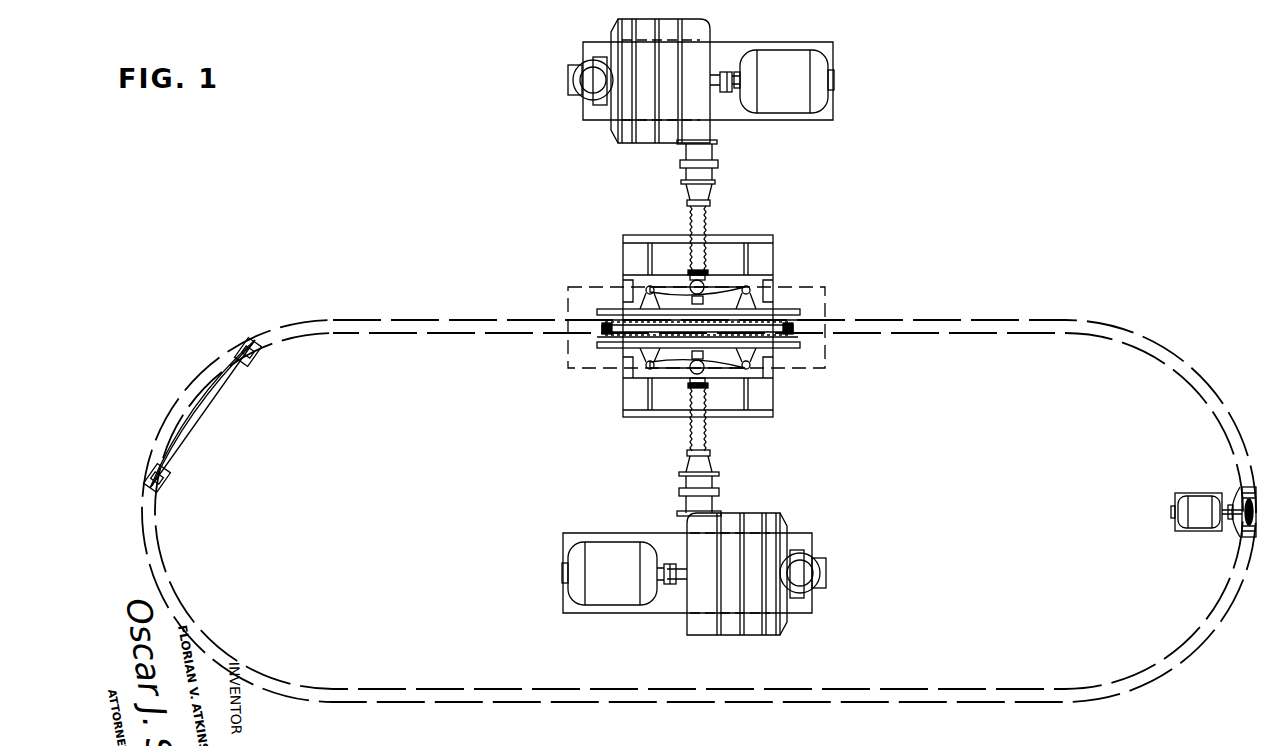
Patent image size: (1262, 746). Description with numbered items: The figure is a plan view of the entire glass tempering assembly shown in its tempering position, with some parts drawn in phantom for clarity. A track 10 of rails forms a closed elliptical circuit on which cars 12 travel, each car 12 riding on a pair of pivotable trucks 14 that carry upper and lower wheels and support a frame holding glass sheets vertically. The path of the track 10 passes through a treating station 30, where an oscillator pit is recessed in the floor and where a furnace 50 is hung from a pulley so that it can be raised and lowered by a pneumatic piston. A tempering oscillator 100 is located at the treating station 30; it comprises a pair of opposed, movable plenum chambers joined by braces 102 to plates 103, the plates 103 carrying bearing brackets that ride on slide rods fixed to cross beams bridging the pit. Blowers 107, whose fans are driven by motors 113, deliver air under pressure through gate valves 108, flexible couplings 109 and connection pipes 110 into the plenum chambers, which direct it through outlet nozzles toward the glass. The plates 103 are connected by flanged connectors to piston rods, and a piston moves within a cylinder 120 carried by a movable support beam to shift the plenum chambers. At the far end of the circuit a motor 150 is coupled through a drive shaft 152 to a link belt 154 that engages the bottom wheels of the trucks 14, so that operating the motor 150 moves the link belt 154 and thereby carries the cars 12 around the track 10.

The track 10 is at (300, 320).
The car 12 is at (200, 416).
The pivotable truck 14 is at (248, 352).
The treating station 30 is at (728, 315).
The furnace 50 is at (600, 287).
The tempering oscillator 100 is at (777, 398).
The brace 102 is at (626, 366).
The plate 103 is at (630, 400).
The blower 107 is at (612, 133).
The gate valve 108 is at (680, 166).
The flexible coupling 109 is at (702, 226).
The connection pipe 110 is at (695, 352).
The motor 113 is at (784, 81).
The cylinder 120 is at (690, 360).
The motor 150 is at (1199, 500).
The drive shaft 152 is at (1236, 530).
The link belt 154 is at (1242, 492).